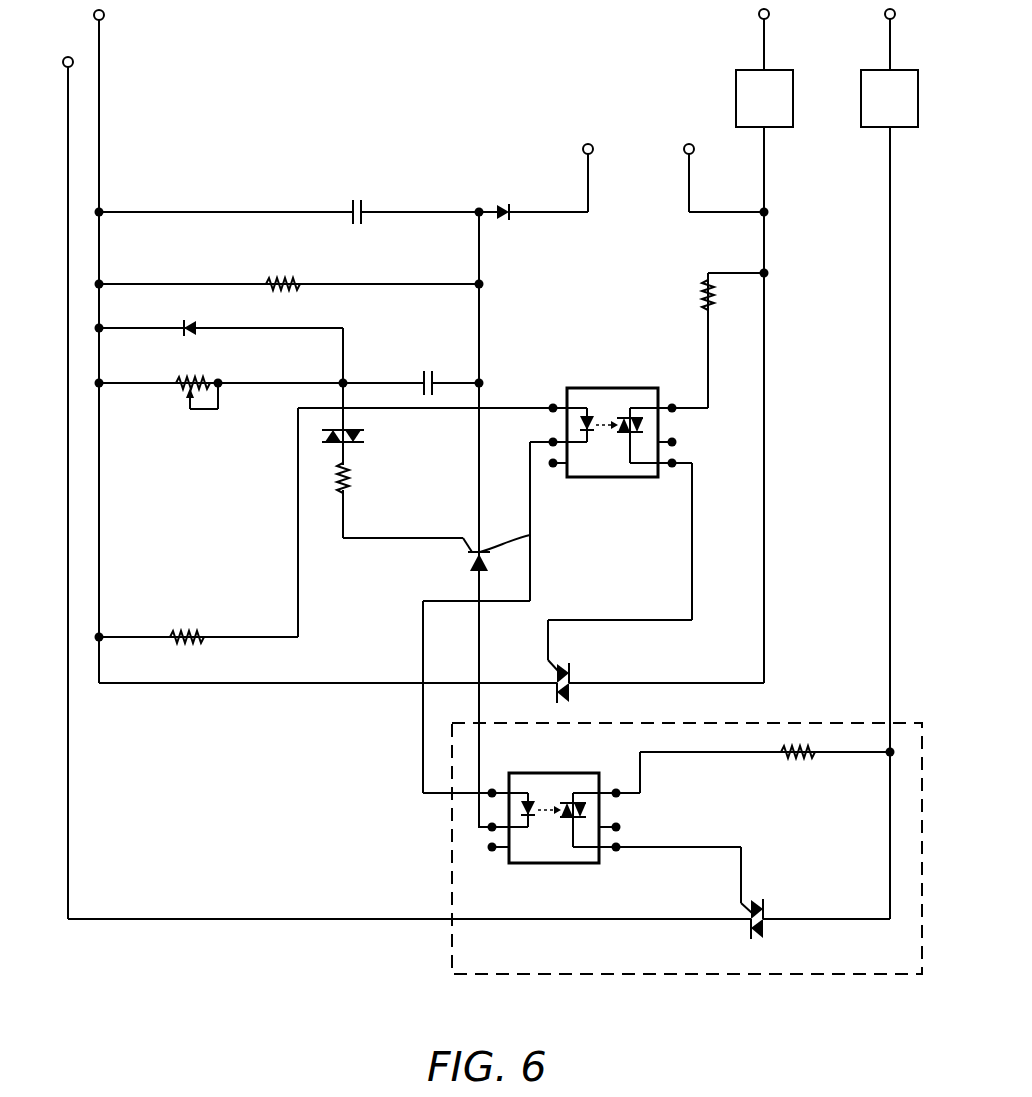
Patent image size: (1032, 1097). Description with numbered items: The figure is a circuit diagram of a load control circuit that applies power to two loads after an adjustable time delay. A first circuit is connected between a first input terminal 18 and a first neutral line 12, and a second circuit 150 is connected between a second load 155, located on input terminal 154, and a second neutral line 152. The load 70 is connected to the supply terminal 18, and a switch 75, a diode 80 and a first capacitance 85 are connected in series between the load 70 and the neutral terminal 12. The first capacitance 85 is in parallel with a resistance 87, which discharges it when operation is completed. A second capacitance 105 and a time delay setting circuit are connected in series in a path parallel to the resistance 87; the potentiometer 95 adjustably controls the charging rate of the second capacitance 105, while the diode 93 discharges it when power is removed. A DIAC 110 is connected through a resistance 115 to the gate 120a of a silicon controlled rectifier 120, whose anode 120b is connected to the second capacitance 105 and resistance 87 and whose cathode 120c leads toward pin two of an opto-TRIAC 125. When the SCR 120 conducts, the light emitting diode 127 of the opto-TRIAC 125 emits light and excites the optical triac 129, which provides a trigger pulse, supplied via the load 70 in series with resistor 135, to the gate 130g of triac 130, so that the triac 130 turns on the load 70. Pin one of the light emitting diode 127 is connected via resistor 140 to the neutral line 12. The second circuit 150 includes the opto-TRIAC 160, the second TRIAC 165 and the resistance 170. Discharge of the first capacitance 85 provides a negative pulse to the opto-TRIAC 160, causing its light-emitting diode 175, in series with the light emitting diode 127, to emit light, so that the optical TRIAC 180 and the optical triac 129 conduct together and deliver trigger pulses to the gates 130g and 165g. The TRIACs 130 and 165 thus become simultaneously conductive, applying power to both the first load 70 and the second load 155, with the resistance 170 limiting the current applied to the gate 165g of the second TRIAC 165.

The neutral terminal 12 is at (104, 26).
The second neutral line 152 is at (72, 77).
The supply terminal 18 is at (759, 20).
The input terminal 154 is at (885, 20).
The load 70 is at (736, 98).
The second load 155 is at (861, 98).
The switch 75 is at (638, 160).
The first capacitance 85 is at (357, 200).
The diode 80 is at (503, 204).
The resistance 87 is at (284, 274).
The diode 93 is at (190, 338).
The potentiometer 95 is at (203, 412).
The second capacitance 105 is at (429, 370).
The DIAC 110 is at (366, 436).
The resistance 115 is at (366, 474).
The silicon controlled rectifier 120 is at (492, 538).
The gate 120a is at (463, 546).
The anode 120b is at (538, 535).
The cathode 120c is at (470, 590).
The opto-TRIAC 125 is at (611, 481).
The light emitting diode 127 is at (589, 404).
The optical triac 129 is at (630, 404).
The resistor 135 is at (701, 292).
The resistor 140 is at (189, 633).
The triac 130 is at (572, 671).
The gate of triac 130g is at (543, 659).
The second circuit 150 is at (712, 975).
The opto-TRIAC 160 is at (552, 773).
The light-emitting diode 175 is at (530, 818).
The optical TRIAC 180 is at (562, 820).
The resistance 170 is at (796, 762).
The second TRIAC 165 is at (765, 904).
The gate of second TRIAC 165g is at (745, 881).